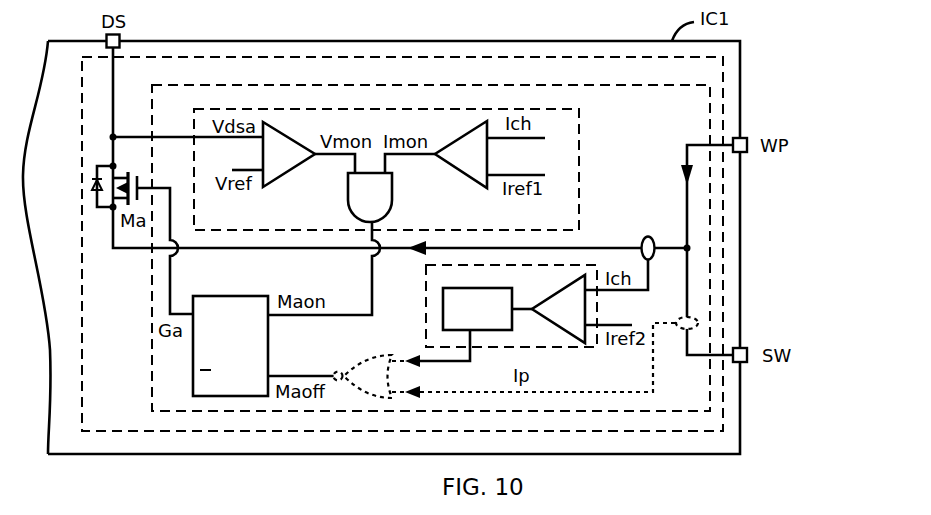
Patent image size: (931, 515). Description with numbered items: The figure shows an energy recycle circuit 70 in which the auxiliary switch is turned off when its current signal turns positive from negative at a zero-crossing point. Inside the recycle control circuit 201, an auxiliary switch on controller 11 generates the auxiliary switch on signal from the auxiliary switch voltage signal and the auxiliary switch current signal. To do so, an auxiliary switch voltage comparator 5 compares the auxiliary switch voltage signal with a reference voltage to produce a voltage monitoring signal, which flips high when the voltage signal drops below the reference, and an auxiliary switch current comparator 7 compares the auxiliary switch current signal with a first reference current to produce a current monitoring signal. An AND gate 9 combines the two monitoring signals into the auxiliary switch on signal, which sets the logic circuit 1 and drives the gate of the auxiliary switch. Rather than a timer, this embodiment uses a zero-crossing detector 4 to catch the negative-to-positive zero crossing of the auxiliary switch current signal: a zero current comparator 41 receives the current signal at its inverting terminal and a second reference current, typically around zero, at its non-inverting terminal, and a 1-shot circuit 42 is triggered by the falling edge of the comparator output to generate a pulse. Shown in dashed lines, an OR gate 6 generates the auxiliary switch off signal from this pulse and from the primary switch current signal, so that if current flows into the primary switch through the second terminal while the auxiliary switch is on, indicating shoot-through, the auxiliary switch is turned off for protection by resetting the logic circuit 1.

The logic circuit 1 is at (247, 296).
The zero-crossing detector 4 is at (592, 266).
The auxiliary switch voltage comparator 5 is at (283, 129).
The OR gate 6 is at (385, 356).
The auxiliary switch current comparator 7 is at (470, 130).
The AND gate 9 is at (392, 190).
The auxiliary switch on controller 11 is at (568, 110).
The zero current comparator 41 is at (566, 288).
The 1-shot circuit 42 is at (455, 288).
The energy recycle circuit 70 is at (402, 244).
The recycle control circuit 201 is at (537, 85).